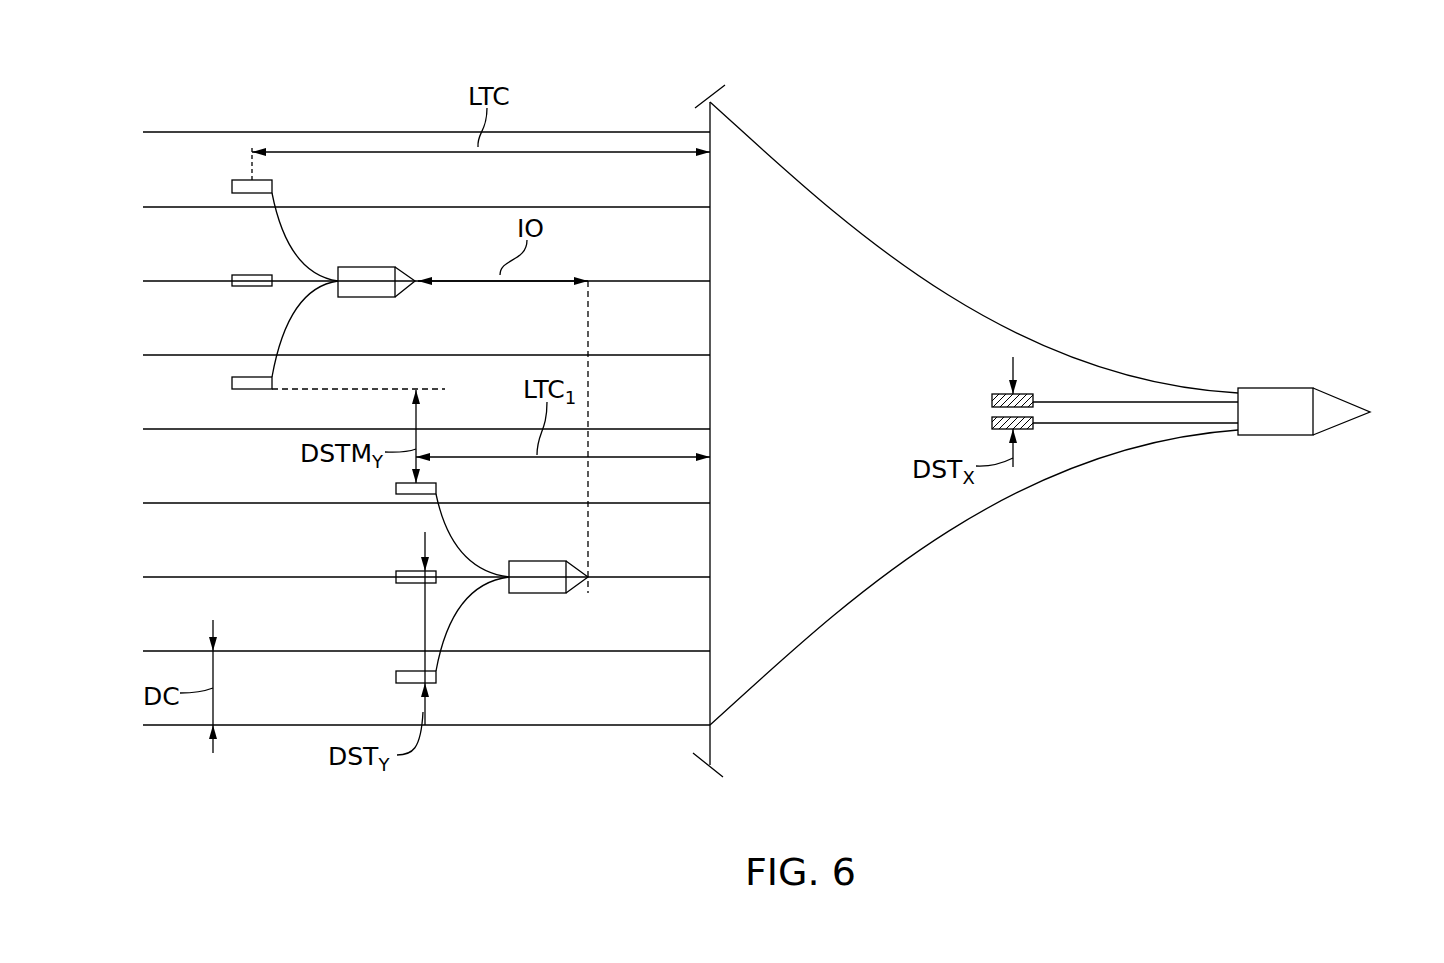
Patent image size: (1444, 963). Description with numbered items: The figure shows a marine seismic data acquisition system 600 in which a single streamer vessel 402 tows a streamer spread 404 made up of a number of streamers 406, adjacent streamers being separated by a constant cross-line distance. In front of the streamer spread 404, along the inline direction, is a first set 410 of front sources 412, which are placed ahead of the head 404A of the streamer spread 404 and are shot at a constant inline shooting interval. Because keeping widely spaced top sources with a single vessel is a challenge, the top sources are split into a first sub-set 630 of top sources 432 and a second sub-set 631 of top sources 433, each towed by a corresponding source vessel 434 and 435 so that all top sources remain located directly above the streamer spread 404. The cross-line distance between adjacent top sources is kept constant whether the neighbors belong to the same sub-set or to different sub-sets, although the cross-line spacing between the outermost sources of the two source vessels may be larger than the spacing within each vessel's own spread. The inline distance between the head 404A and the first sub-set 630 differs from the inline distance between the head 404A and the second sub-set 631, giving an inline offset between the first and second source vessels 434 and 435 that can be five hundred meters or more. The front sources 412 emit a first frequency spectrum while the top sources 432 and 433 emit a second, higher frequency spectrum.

The seismic system 600 is at (1315, 84).
The streamer vessel 402 is at (1265, 376).
The streamer spread 404 is at (292, 737).
The head of the streamer spread 404A is at (720, 331).
The streamer 406 is at (561, 727).
The first set of front sources 410 is at (1036, 441).
The front source 412 is at (992, 397).
The top source 432 is at (252, 274).
The top source 433 is at (408, 570).
The source vessel 434 is at (365, 266).
The source vessel 435 is at (537, 560).
The first sub-set of top sources 630 is at (256, 293).
The second sub-set of top sources 631 is at (398, 592).